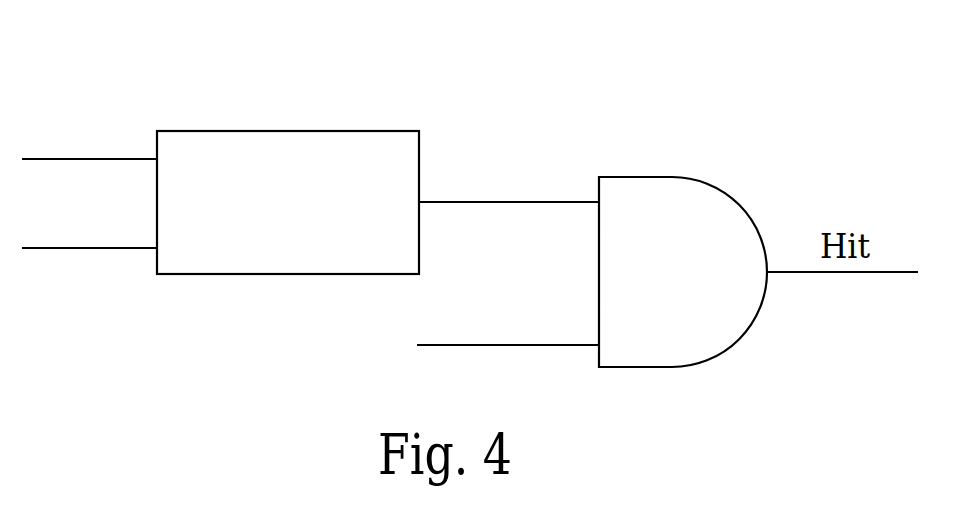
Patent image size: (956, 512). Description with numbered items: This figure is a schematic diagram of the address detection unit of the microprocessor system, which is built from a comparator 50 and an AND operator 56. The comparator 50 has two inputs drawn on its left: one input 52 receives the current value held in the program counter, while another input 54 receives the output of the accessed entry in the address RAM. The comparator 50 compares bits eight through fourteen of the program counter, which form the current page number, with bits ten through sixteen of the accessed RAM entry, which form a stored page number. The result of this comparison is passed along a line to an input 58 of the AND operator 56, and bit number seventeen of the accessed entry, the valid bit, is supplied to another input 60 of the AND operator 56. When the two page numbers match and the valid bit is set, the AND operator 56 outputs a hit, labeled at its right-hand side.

The comparator 50 is at (308, 274).
The input of the comparator 52 is at (88, 158).
The input of the comparator 54 is at (89, 250).
The AND operator 56 is at (662, 178).
The input of the AND operator 58 is at (533, 202).
The input of the AND operator 60 is at (587, 337).